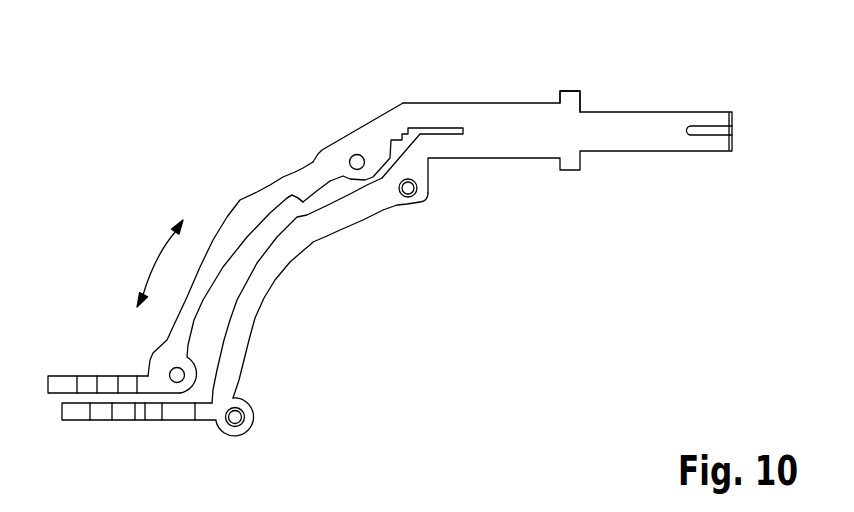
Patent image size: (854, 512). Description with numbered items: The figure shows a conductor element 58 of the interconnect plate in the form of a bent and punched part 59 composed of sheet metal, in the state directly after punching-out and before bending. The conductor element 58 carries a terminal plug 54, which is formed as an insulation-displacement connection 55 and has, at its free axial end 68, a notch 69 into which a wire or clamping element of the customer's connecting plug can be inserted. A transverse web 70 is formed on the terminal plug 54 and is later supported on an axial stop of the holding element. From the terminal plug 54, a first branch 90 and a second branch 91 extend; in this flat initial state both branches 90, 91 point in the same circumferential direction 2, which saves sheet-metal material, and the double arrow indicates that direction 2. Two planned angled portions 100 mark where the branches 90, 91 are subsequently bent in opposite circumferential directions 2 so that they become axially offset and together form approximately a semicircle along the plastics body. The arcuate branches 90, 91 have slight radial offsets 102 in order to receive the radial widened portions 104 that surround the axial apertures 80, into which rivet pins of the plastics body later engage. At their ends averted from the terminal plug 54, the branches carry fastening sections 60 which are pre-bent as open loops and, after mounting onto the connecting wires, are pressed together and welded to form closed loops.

The circumferential direction 2 is at (152, 262).
The terminal plug 54 is at (567, 118).
The insulation-displacement connection 55 is at (657, 118).
The conductor element 58 is at (490, 283).
The bent and punched part 59 is at (440, 256).
The fastening section 60 is at (90, 383).
The free axial end 68 is at (704, 178).
The notch 69 is at (727, 129).
The transverse web 70 is at (571, 97).
The axial aperture 80 is at (244, 416).
The first branch 90 is at (261, 291).
The second branch 91 is at (240, 220).
The planned angled portion 100 is at (443, 147).
The radial offset 102 is at (302, 222).
The radial widened portion 104 is at (422, 201).